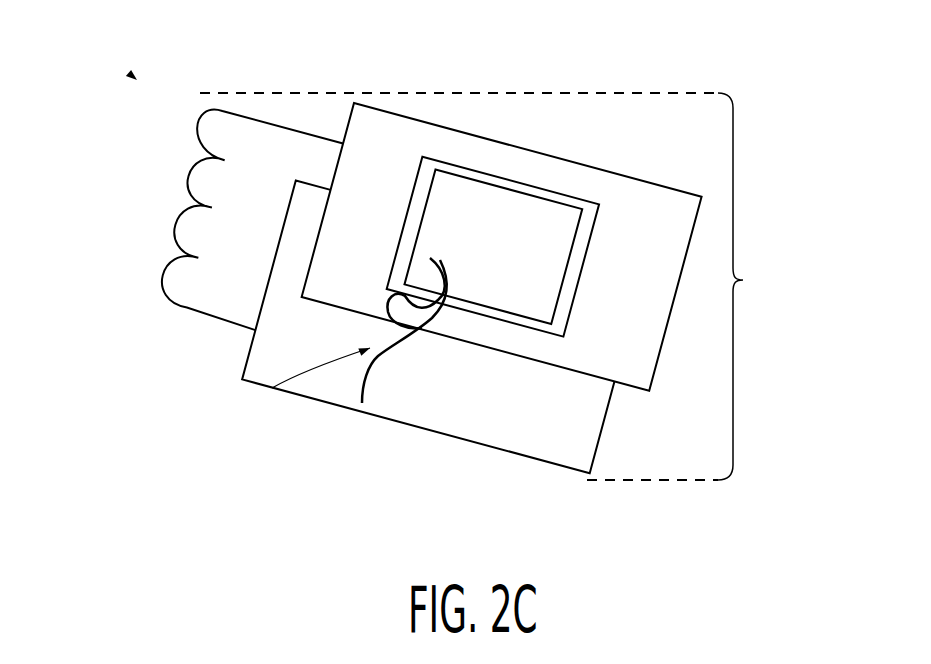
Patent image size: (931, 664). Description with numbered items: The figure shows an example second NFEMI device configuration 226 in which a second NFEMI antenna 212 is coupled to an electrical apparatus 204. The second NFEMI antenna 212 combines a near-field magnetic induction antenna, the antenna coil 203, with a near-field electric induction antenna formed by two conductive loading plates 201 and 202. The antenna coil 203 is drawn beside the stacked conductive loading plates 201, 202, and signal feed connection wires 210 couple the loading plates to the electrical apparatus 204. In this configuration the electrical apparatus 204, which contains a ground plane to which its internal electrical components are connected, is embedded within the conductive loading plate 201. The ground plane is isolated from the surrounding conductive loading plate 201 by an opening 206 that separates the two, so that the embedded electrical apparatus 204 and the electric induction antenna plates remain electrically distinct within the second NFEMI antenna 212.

The conductive loading plate 201 is at (675, 234).
The conductive loading plate 202 is at (557, 418).
The antenna coil 203 is at (180, 220).
The electrical apparatus 204 is at (557, 243).
The opening 206 is at (457, 320).
The signal feed connection wires 210 is at (272, 388).
The second NFEMI antenna 212 is at (494, 286).
The second NFEMI device configuration 226 is at (137, 80).